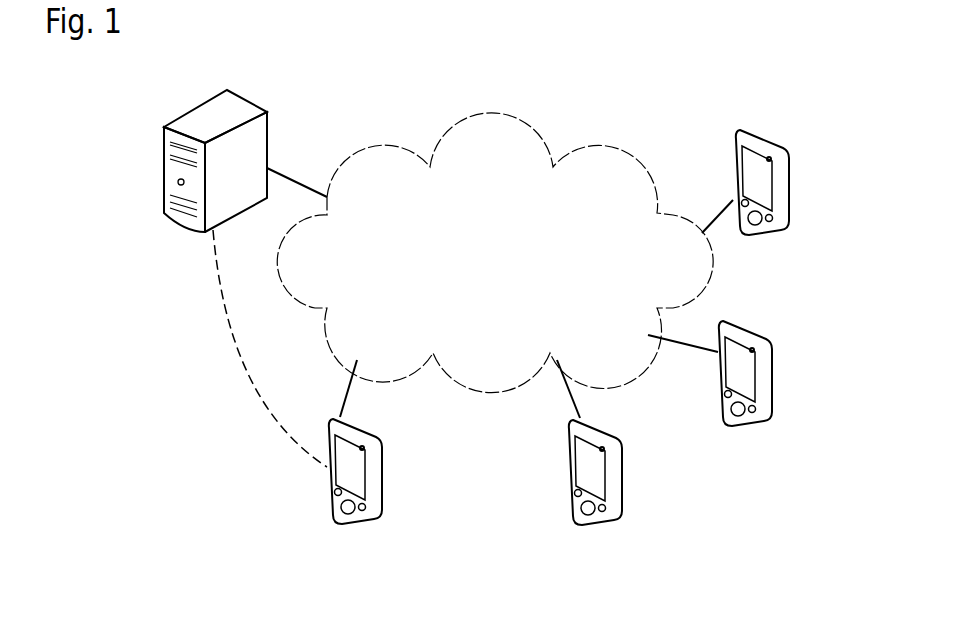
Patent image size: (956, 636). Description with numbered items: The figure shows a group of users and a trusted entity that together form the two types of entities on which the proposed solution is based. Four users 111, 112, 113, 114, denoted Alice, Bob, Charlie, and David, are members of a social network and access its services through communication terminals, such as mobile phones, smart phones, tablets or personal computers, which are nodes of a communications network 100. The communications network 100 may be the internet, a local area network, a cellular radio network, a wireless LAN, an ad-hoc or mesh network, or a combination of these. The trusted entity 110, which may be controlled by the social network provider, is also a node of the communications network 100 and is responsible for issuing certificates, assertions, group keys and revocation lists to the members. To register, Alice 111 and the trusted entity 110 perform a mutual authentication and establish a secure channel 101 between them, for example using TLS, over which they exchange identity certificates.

The communications network 100 is at (505, 120).
The secure channel 101 is at (232, 332).
The trusted entity 110 is at (177, 116).
The user 111 is at (357, 423).
The user 112 is at (602, 425).
The user 113 is at (752, 335).
The user 114 is at (767, 140).